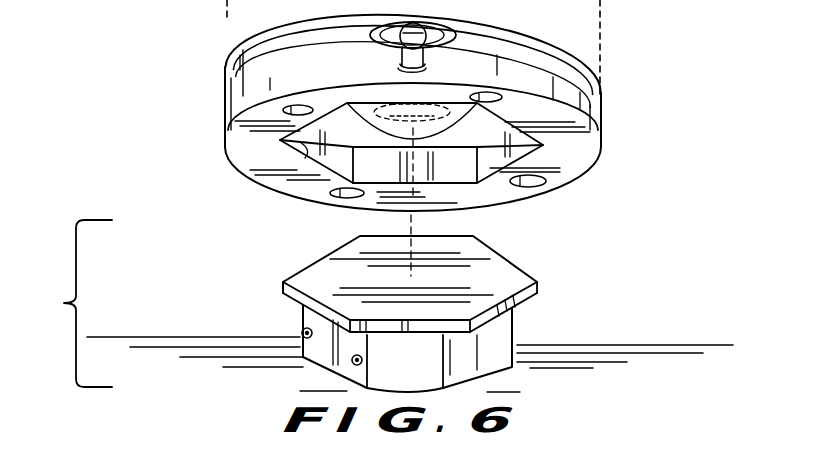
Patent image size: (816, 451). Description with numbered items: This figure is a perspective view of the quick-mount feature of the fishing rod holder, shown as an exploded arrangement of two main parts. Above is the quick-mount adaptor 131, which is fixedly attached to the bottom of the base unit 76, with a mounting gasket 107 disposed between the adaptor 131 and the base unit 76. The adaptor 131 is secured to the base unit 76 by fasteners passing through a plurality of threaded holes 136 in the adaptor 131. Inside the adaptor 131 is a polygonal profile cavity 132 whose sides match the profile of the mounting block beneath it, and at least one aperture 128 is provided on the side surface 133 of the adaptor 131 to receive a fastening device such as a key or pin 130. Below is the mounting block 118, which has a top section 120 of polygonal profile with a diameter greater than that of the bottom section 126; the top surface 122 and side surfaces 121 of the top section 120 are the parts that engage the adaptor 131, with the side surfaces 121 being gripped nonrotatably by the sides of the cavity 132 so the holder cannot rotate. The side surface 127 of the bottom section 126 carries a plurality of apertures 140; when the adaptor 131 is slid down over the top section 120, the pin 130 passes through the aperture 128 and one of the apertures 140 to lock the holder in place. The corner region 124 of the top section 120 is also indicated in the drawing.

The base unit 76 is at (601, 18).
The mounting gasket 107 is at (240, 52).
The mounting block 118 is at (59, 303).
The top section 120 is at (538, 284).
The side surfaces 121 is at (532, 297).
The top surface 122 is at (497, 275).
The plate corner 124 is at (283, 290).
The bottom section 126 is at (513, 370).
The side surface 127 is at (352, 362).
The aperture 128 is at (400, 76).
The pin 130 is at (452, 27).
The quick-mount adaptor 131 is at (600, 111).
The polygonal profile cavity 132 is at (262, 172).
The side surface 133 is at (237, 102).
The threaded holes 136 is at (492, 101).
The apertures 140 is at (300, 333).